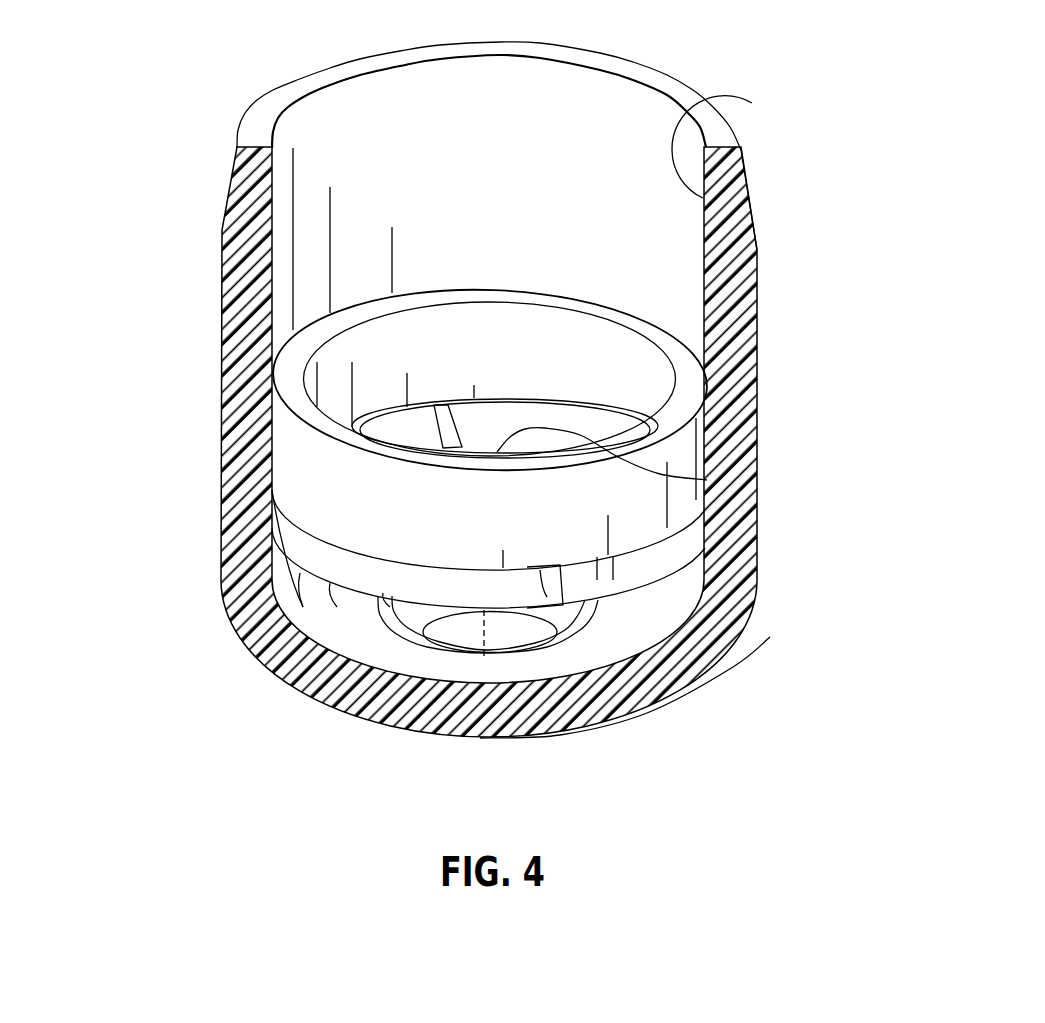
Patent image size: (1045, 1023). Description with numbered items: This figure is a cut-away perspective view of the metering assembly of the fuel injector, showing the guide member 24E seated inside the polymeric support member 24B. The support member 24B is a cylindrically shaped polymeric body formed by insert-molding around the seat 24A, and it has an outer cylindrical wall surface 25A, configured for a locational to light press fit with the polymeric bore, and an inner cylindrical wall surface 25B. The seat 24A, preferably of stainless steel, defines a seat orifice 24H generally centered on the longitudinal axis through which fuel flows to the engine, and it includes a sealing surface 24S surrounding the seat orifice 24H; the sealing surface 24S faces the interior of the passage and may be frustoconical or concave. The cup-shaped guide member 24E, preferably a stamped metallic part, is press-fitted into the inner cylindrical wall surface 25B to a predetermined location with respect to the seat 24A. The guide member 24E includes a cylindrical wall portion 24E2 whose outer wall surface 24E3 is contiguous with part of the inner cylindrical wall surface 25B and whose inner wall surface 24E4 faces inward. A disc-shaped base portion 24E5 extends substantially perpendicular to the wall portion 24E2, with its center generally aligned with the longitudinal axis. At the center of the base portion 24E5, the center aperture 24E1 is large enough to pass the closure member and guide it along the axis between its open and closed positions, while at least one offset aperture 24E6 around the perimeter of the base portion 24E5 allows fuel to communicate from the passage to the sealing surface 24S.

The seat 24A is at (560, 655).
The polymeric support member 24B is at (732, 272).
The guide member 24E is at (330, 563).
The center aperture 24E1 is at (530, 410).
The cylindrical wall portion 24E2 is at (373, 445).
The outer wall surface 24E3 is at (680, 447).
The inner wall surface 24E4 is at (375, 338).
The base portion 24E5 is at (535, 403).
The offset aperture 24E6 is at (403, 423).
The seat orifice 24H is at (510, 637).
The sealing surface 24S is at (572, 612).
The outer cylindrical wall surface 25A is at (757, 232).
The inner cylindrical wall surface 25B is at (752, 103).